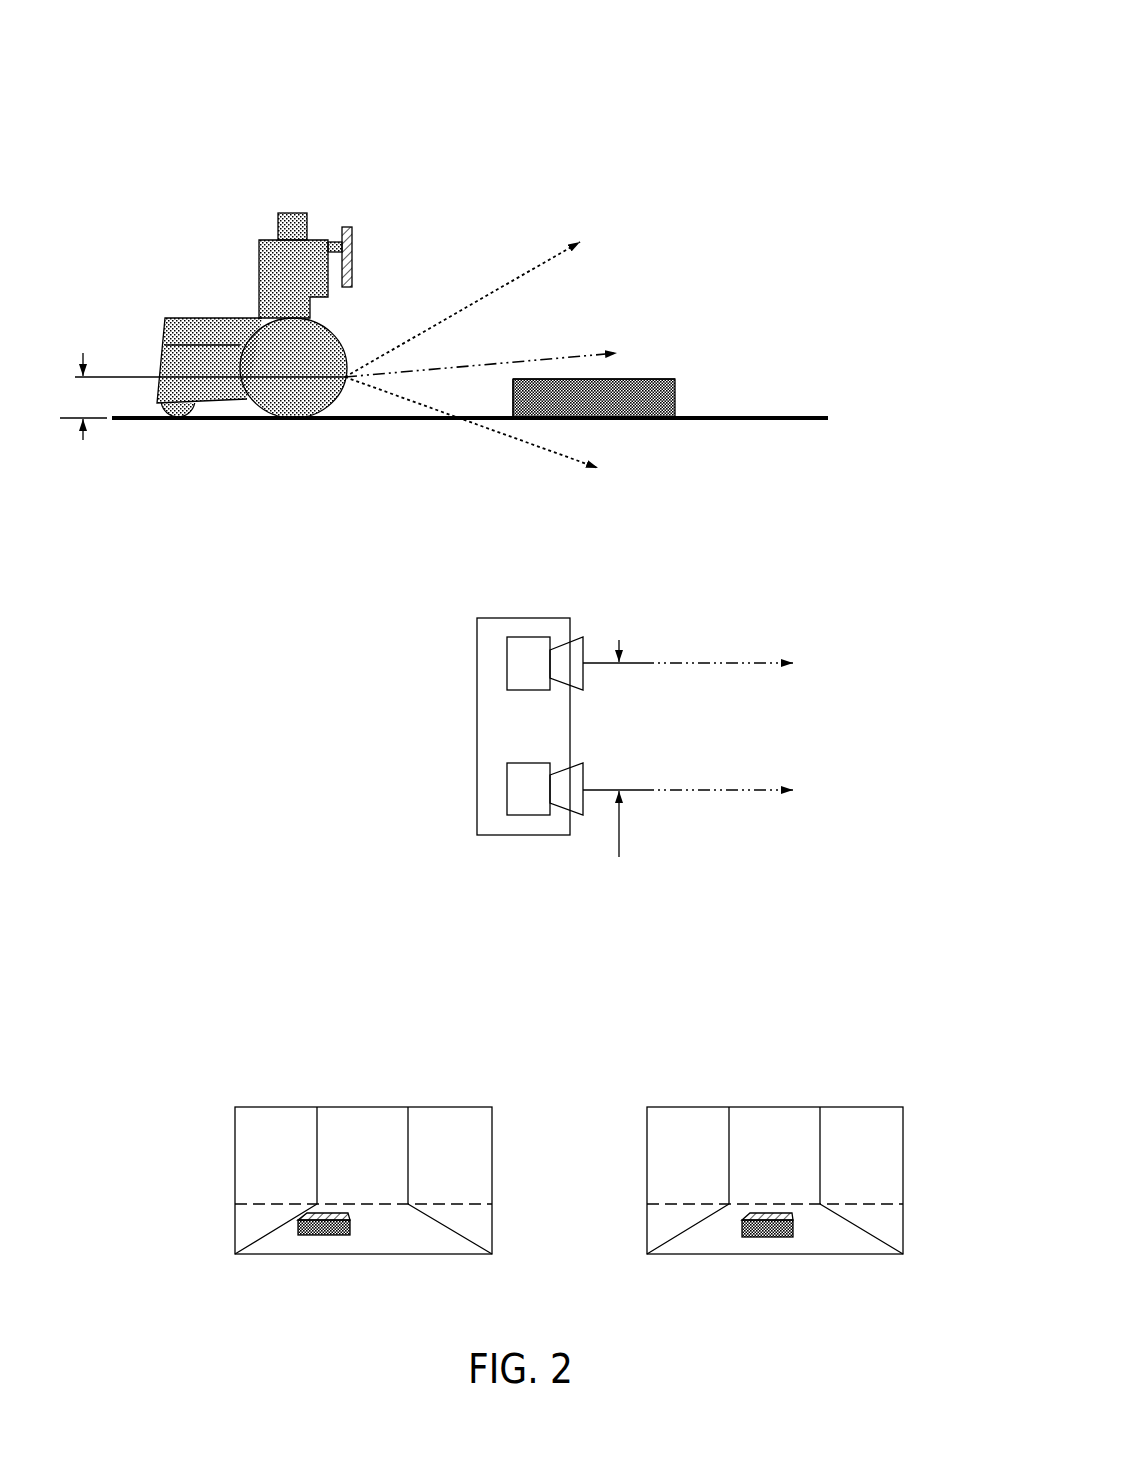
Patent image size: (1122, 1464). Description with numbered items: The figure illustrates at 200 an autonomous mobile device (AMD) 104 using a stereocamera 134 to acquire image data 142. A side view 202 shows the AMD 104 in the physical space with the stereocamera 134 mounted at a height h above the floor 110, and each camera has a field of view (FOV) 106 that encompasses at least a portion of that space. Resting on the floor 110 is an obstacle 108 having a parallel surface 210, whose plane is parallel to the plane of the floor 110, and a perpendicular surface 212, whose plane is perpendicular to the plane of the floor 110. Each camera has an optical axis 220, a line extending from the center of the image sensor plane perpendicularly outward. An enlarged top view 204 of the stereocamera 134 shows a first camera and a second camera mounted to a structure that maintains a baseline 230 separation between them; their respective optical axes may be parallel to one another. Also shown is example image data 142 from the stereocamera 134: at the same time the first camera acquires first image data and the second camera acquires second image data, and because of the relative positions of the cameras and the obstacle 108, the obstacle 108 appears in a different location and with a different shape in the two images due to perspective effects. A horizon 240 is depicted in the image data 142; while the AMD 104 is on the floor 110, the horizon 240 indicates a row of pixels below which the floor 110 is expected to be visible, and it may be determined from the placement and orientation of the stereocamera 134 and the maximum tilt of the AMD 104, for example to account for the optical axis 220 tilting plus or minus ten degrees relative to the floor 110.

The illustration of AMD using stereocamera 200 is at (847, 53).
The side view 202 is at (225, 88).
The autonomous mobile device (AMD) 104 is at (278, 257).
The stereocamera 134 is at (477, 730).
The field of view (FOV) 106 is at (523, 275).
The optical axis 220 is at (584, 355).
The parallel surface 210 is at (620, 378).
The obstacle 108 is at (638, 379).
The perpendicular surface 212 is at (508, 398).
The floor 110 is at (705, 418).
The top view 204 is at (248, 608).
The baseline 230 is at (618, 774).
The image data 142 is at (267, 940).
The horizon 240 is at (257, 1202).